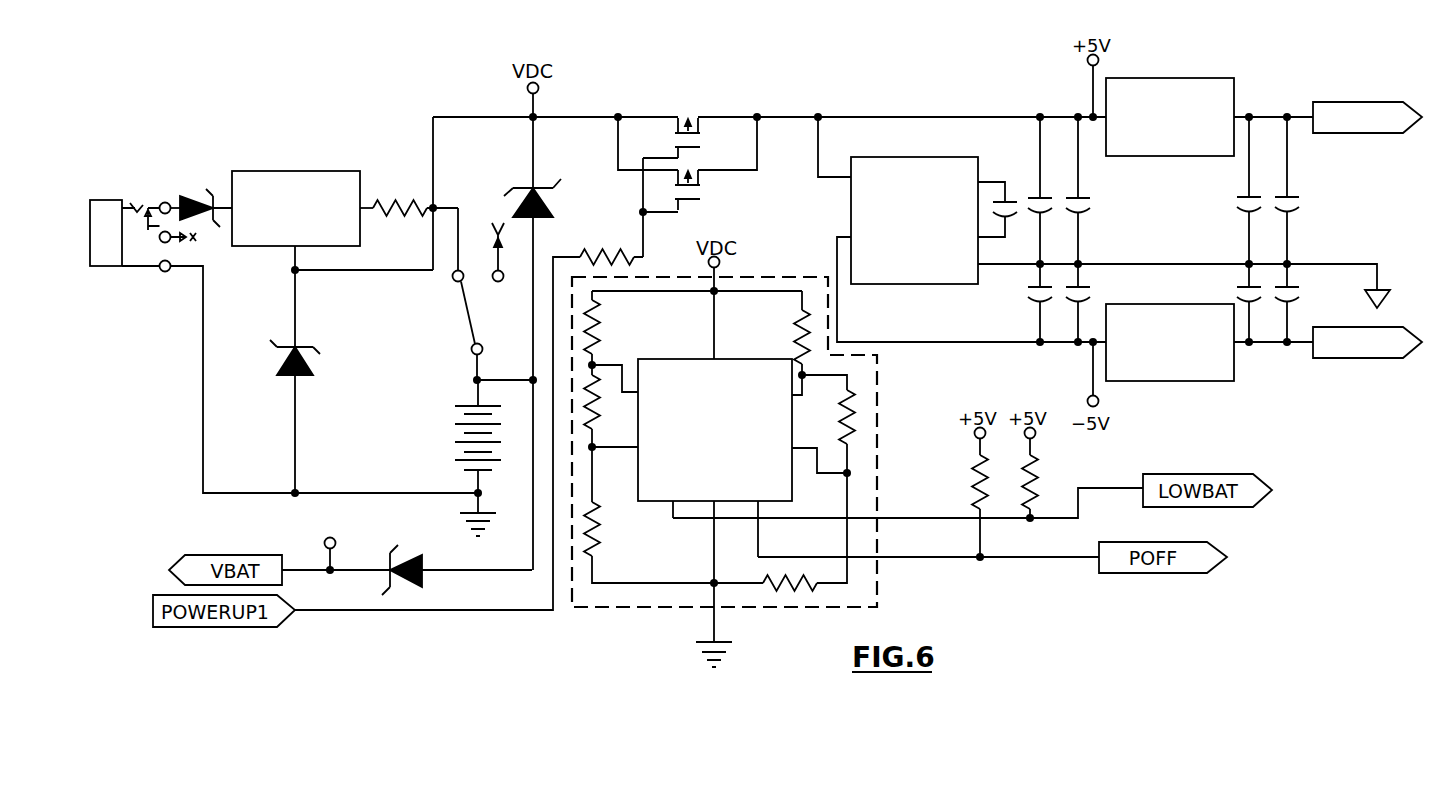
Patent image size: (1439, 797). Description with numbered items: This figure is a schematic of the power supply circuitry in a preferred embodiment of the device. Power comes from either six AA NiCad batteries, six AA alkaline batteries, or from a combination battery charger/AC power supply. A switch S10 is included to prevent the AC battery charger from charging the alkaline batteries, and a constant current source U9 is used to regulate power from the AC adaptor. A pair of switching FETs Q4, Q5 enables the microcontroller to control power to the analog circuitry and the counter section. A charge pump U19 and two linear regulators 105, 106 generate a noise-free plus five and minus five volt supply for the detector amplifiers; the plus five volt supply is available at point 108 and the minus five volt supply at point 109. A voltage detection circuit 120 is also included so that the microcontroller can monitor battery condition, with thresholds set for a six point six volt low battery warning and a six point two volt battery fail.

The constant current source U9 is at (340, 171).
The switch S10 is at (470, 312).
The switching FET Q4 is at (688, 117).
The switching FET Q5 is at (700, 201).
The charge pump U19 is at (893, 157).
The linear regulator 105 is at (1215, 78).
The linear regulator 106 is at (1217, 381).
The point 108 is at (1360, 133).
The point 109 is at (1360, 358).
The voltage detection circuit 120 is at (652, 607).